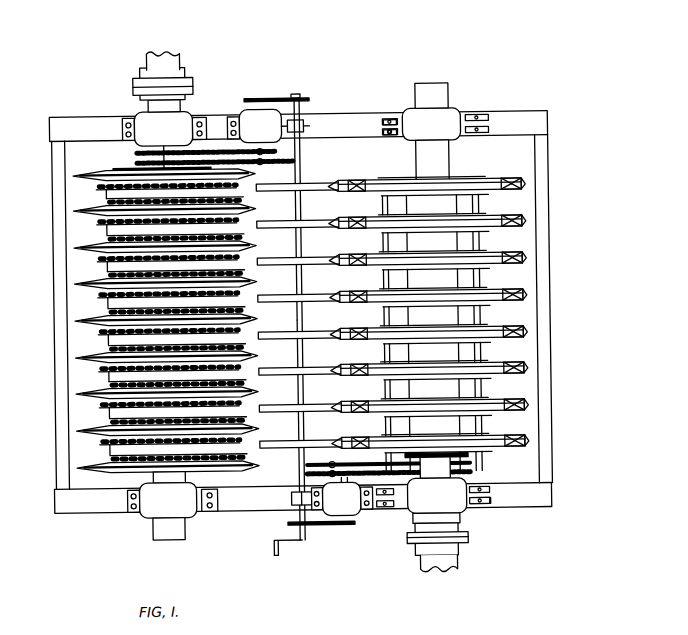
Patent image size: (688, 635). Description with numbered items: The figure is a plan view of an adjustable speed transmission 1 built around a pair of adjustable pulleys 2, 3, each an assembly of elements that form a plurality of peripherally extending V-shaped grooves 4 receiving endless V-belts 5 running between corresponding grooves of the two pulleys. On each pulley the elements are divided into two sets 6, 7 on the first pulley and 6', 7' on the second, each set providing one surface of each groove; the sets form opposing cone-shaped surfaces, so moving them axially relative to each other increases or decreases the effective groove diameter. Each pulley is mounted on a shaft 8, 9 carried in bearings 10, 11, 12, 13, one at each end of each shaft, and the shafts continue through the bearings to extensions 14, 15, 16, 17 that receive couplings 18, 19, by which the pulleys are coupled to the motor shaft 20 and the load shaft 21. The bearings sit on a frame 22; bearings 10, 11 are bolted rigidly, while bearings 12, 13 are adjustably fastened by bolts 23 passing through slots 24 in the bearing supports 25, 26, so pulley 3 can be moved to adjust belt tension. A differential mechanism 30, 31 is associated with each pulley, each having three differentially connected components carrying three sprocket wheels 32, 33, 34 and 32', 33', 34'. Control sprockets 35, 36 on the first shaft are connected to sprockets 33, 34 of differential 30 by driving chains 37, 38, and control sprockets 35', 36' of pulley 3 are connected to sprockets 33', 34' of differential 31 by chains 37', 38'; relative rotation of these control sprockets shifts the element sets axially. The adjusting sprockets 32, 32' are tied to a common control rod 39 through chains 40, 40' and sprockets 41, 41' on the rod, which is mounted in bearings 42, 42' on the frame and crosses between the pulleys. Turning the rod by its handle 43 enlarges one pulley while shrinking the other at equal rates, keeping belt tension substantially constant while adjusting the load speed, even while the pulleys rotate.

The adjustable speed transmission 1 is at (522, 100).
The adjustable pulley 2 is at (221, 470).
The adjustable pulley 3 is at (512, 172).
The V-shaped grooves 4 is at (85, 266).
The V-belts 5 is at (312, 260).
The set of pulley elements 6 is at (142, 337).
The set of pulley elements 6' is at (427, 287).
The set of pulley elements 7 is at (181, 316).
The set of pulley elements 7' is at (426, 213).
The shaft 8 is at (150, 478).
The shaft 9 is at (451, 156).
The bearing 10 is at (164, 128).
The bearing 11 is at (172, 500).
The bearing 12 is at (435, 123).
The bearing 13 is at (448, 495).
The shaft extension 14 is at (150, 106).
The shaft extension 15 is at (152, 532).
The shaft extension 16 is at (447, 88).
The shaft extension 17 is at (462, 516).
The coupling 18 is at (137, 82).
The coupling 19 is at (466, 541).
The motor shaft 20 is at (165, 58).
The load shaft 21 is at (455, 566).
The frame 22 is at (543, 496).
The bolts 23 is at (392, 118).
The slots 24 is at (384, 118).
The bearing support 25 is at (386, 129).
The bearing support 26 is at (399, 509).
The differential mechanism 30 is at (254, 126).
The differential mechanism 31 is at (341, 499).
The adjusting sprocket 32 is at (276, 79).
The adjusting sprocket 32' is at (322, 550).
The sprocket wheel 33 is at (294, 150).
The sprocket wheel 33' is at (304, 474).
The sprocket wheel 34 is at (294, 165).
The sprocket wheel 34' is at (304, 461).
The control sprocket 35 is at (175, 151).
The control sprocket 35' is at (441, 476).
The control sprocket 36 is at (184, 164).
The control sprocket 36' is at (441, 460).
The driving chain 37 is at (190, 118).
The control chain 37' is at (356, 519).
The driving chain 38 is at (177, 126).
The control chain 38' is at (364, 526).
The control rod 39 is at (297, 246).
The chain 40 is at (299, 185).
The control chain 40' is at (316, 490).
The sprocket 41 is at (317, 79).
The sprocket 41' is at (288, 555).
The bearing 42 is at (311, 124).
The bearing 42' is at (281, 498).
The handle 43 is at (272, 553).